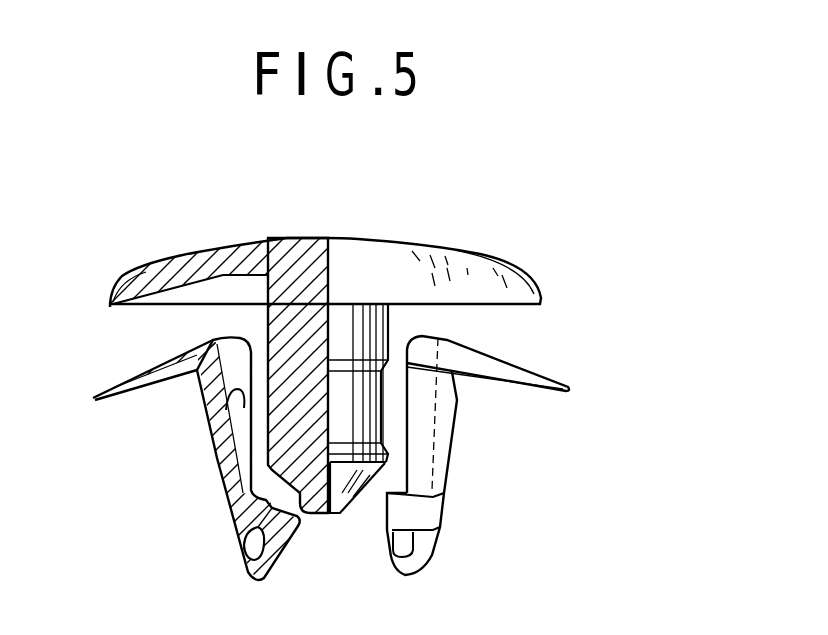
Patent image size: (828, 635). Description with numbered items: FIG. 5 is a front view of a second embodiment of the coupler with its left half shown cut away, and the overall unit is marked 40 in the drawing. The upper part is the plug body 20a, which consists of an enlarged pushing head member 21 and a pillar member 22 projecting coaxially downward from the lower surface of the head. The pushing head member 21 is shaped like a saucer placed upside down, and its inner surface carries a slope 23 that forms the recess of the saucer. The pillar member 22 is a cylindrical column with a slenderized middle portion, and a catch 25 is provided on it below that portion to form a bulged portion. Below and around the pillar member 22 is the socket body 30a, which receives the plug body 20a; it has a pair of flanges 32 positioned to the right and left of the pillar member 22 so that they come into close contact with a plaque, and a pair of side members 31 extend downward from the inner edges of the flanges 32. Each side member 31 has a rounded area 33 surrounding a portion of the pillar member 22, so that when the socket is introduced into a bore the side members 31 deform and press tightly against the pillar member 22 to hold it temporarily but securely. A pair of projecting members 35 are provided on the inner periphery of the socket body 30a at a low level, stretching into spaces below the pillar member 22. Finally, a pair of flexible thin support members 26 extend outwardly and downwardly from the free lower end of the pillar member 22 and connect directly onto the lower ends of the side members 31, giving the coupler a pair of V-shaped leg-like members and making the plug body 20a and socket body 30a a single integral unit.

The clip 40 is at (220, 242).
The plug body 20a is at (545, 281).
The pushing head member 21 is at (464, 249).
The pillar member 22 is at (393, 313).
The slope 23 is at (150, 308).
The catch 25 is at (383, 446).
The thin support members 26 is at (373, 527).
The socket body 30a is at (547, 417).
The side members 31 is at (224, 482).
The flanges 32 is at (144, 392).
The rounded area 33 is at (226, 402).
The projecting members 35 is at (275, 515).